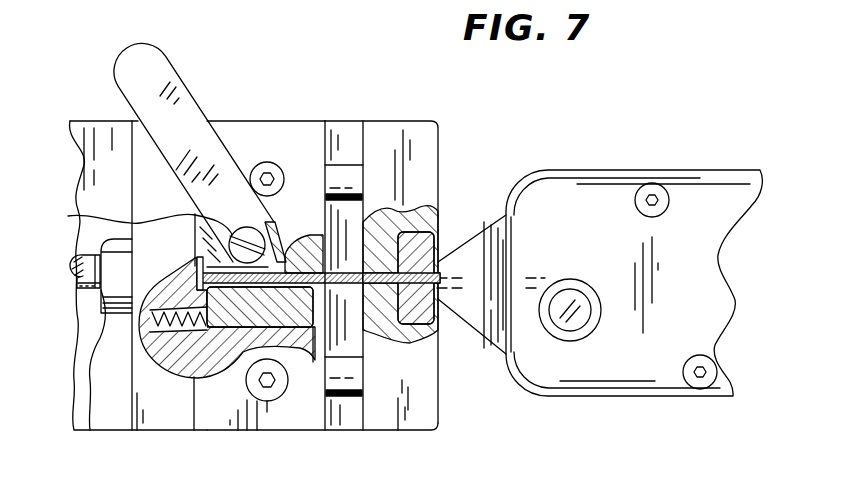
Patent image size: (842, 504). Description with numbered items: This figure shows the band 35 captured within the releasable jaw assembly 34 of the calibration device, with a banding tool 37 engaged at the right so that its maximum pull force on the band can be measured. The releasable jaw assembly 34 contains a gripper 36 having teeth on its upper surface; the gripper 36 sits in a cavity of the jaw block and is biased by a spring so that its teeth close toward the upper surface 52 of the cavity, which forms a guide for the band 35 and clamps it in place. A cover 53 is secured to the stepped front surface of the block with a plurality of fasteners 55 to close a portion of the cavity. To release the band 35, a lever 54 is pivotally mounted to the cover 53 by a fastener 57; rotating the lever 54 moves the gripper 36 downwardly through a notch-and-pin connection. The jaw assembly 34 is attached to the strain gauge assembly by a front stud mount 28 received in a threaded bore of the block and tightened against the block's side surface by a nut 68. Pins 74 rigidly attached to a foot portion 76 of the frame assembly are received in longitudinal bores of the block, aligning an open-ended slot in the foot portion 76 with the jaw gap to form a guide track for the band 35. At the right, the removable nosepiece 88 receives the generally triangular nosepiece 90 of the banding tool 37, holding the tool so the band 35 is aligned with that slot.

The front stud mount 28 is at (83, 289).
The releasable jaw assembly 34 is at (293, 120).
The band 35 is at (441, 208).
The gripper 36 is at (311, 428).
The banding tool 37 is at (703, 162).
The upper surface of the cavity 52 is at (187, 262).
The cover 53 is at (230, 121).
The lever 54 is at (174, 68).
The fasteners 55 is at (284, 163).
The fastener 57 is at (153, 233).
The nut 68 is at (88, 357).
The pins 74 is at (350, 178).
The foot portion 76 is at (440, 128).
The removable nosepiece 88 is at (441, 305).
The nosepiece 90 is at (440, 260).